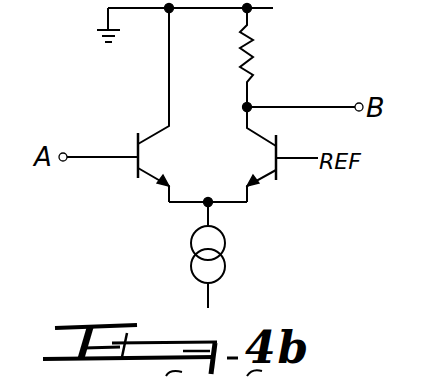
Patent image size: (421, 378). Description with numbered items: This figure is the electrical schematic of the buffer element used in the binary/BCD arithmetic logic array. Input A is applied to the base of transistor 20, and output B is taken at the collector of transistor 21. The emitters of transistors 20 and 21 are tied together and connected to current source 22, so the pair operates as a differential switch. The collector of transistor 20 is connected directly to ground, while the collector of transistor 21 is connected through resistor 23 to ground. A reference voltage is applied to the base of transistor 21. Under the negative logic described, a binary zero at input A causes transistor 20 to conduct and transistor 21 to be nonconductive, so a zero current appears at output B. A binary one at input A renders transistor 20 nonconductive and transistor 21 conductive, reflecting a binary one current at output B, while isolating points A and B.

The transistor 20 is at (150, 171).
The transistor 21 is at (259, 172).
The current source 22 is at (226, 247).
The resistor 23 is at (254, 53).